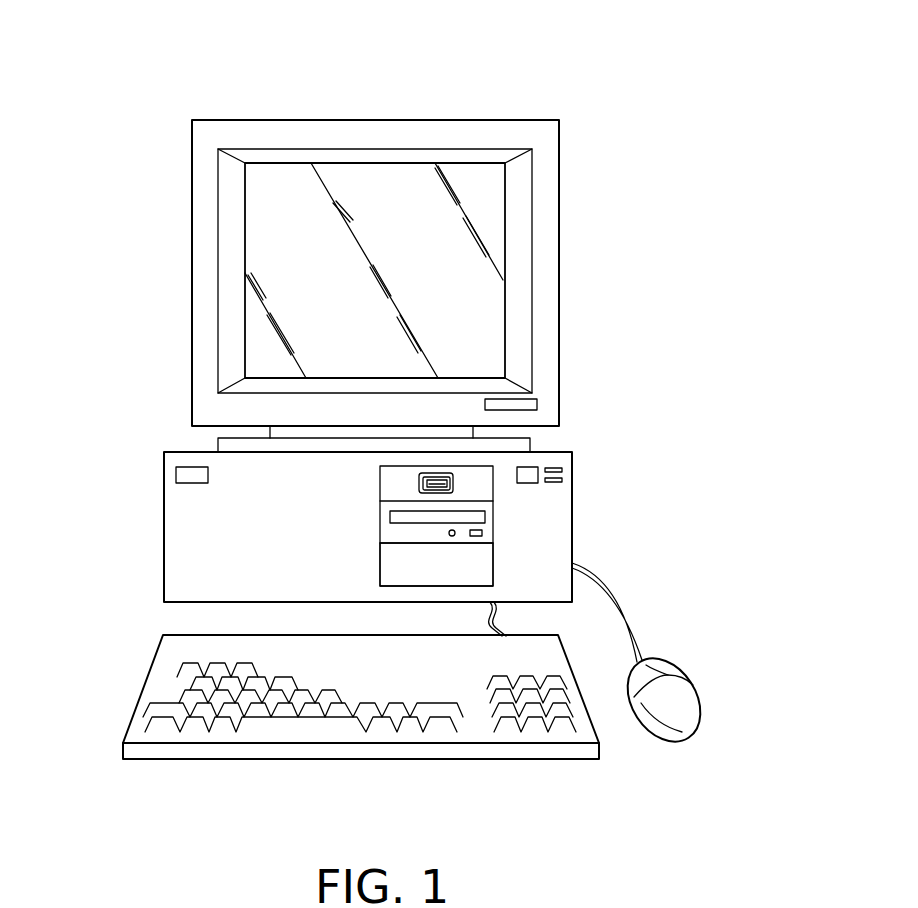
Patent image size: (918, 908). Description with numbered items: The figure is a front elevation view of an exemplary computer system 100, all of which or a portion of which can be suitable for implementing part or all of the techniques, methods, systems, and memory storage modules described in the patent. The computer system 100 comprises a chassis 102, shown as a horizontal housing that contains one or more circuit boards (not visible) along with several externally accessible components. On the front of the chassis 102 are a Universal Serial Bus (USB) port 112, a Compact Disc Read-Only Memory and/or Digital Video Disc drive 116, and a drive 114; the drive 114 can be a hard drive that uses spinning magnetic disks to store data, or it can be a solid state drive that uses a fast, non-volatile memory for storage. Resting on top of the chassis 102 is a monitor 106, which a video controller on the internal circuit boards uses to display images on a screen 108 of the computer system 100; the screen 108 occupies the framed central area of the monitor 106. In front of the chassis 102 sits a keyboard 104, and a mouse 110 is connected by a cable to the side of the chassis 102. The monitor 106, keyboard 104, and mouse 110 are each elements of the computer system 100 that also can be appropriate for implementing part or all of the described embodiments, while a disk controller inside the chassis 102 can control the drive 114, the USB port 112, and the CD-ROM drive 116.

The computer system 100 is at (552, 94).
The chassis 102 is at (163, 527).
The keyboard 104 is at (147, 685).
The monitor 106 is at (265, 120).
The screen 108 is at (293, 276).
The mouse 110 is at (688, 688).
The Universal Serial Bus (USB) port 112 is at (454, 478).
The drive 114 is at (485, 563).
The CD-ROM and/or DVD drive 116 is at (485, 521).